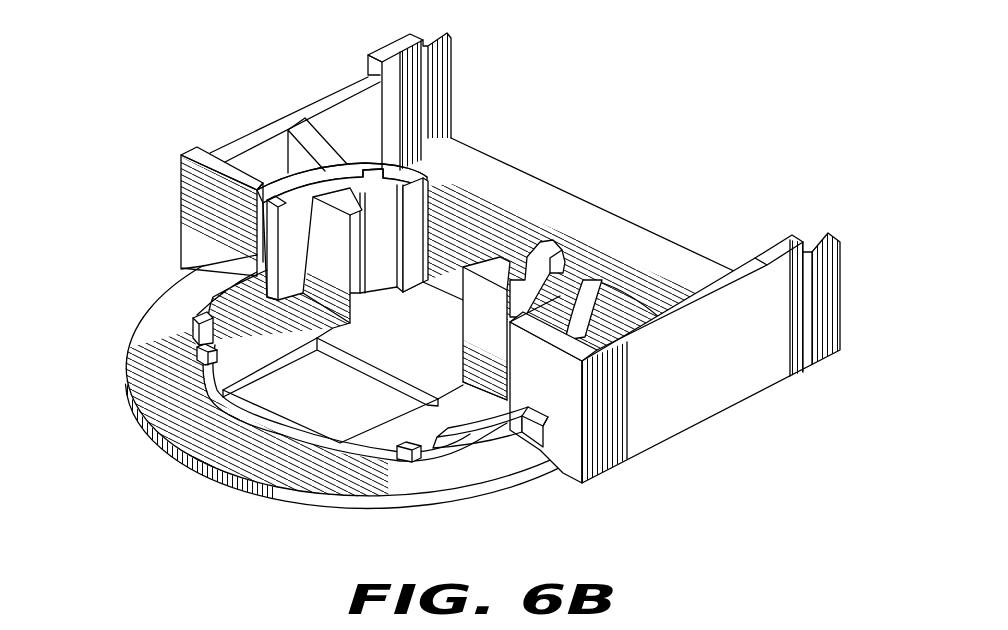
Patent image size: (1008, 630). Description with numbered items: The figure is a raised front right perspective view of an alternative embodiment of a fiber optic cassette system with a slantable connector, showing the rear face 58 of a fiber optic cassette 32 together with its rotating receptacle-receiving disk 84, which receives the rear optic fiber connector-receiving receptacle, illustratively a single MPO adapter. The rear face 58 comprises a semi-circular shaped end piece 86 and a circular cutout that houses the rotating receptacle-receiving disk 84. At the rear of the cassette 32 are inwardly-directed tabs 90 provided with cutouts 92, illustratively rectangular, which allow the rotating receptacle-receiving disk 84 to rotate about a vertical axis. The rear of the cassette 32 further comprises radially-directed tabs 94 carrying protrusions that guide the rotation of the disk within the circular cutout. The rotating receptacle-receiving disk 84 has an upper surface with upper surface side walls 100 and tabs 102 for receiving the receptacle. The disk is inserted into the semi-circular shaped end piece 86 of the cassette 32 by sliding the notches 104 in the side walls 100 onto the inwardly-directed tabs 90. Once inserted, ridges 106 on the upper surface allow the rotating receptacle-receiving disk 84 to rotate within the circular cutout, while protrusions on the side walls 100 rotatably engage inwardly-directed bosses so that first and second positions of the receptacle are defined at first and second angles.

The fiber optic cassette 32 is at (783, 327).
The rear face 58 is at (187, 270).
The rotating receptacle-receiving disk 84 is at (180, 417).
The semi-circular shaped end piece 86 is at (297, 497).
The inwardly-directed tabs 90 is at (213, 207).
The cutouts 92 is at (530, 430).
The radially-directed tabs 94 is at (350, 168).
The upper surface side walls 100 is at (287, 200).
The tabs 102 is at (327, 243).
The notches 104 is at (378, 147).
The ridges 106 is at (197, 302).